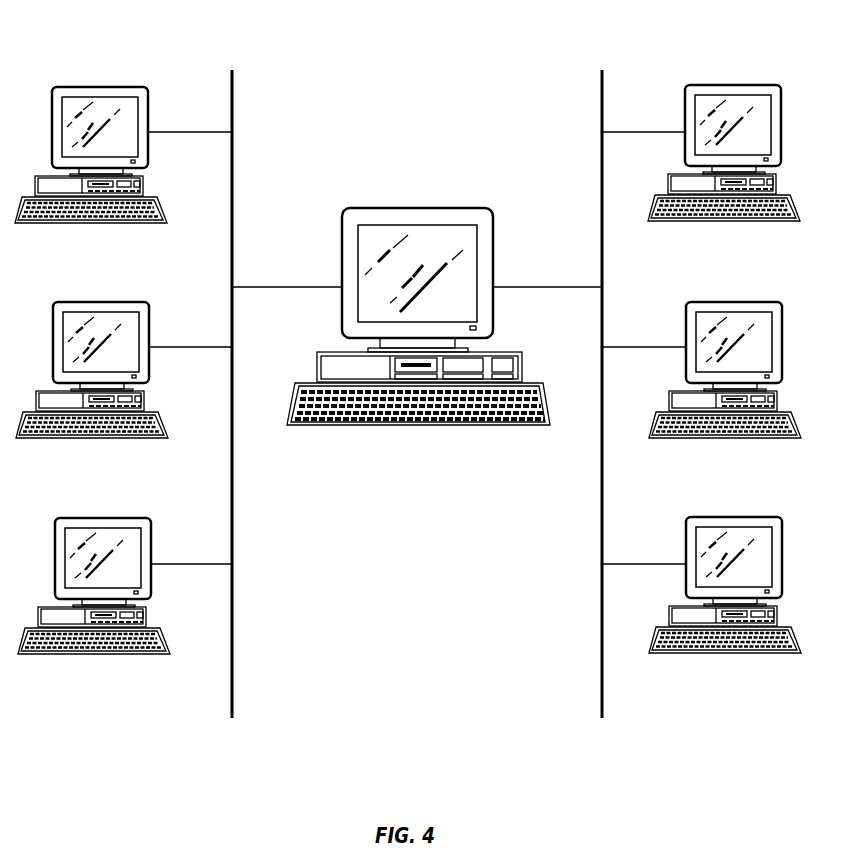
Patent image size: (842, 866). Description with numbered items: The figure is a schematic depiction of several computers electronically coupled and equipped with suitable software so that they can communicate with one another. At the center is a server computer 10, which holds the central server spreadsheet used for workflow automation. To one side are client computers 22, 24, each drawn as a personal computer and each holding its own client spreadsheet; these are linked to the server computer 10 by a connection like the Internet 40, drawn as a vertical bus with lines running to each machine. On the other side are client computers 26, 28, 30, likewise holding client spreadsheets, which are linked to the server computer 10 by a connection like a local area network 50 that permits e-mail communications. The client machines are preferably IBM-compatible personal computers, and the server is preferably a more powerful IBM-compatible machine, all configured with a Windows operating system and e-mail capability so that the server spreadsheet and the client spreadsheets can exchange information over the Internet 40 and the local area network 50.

The server computer 10 is at (462, 208).
The client computer 22 is at (123, 87).
The client computer 24 is at (127, 518).
The client computer 26 is at (757, 85).
The client computer 28 is at (758, 302).
The client computer 30 is at (758, 517).
The Internet 40 is at (233, 700).
The local area network 50 is at (602, 700).